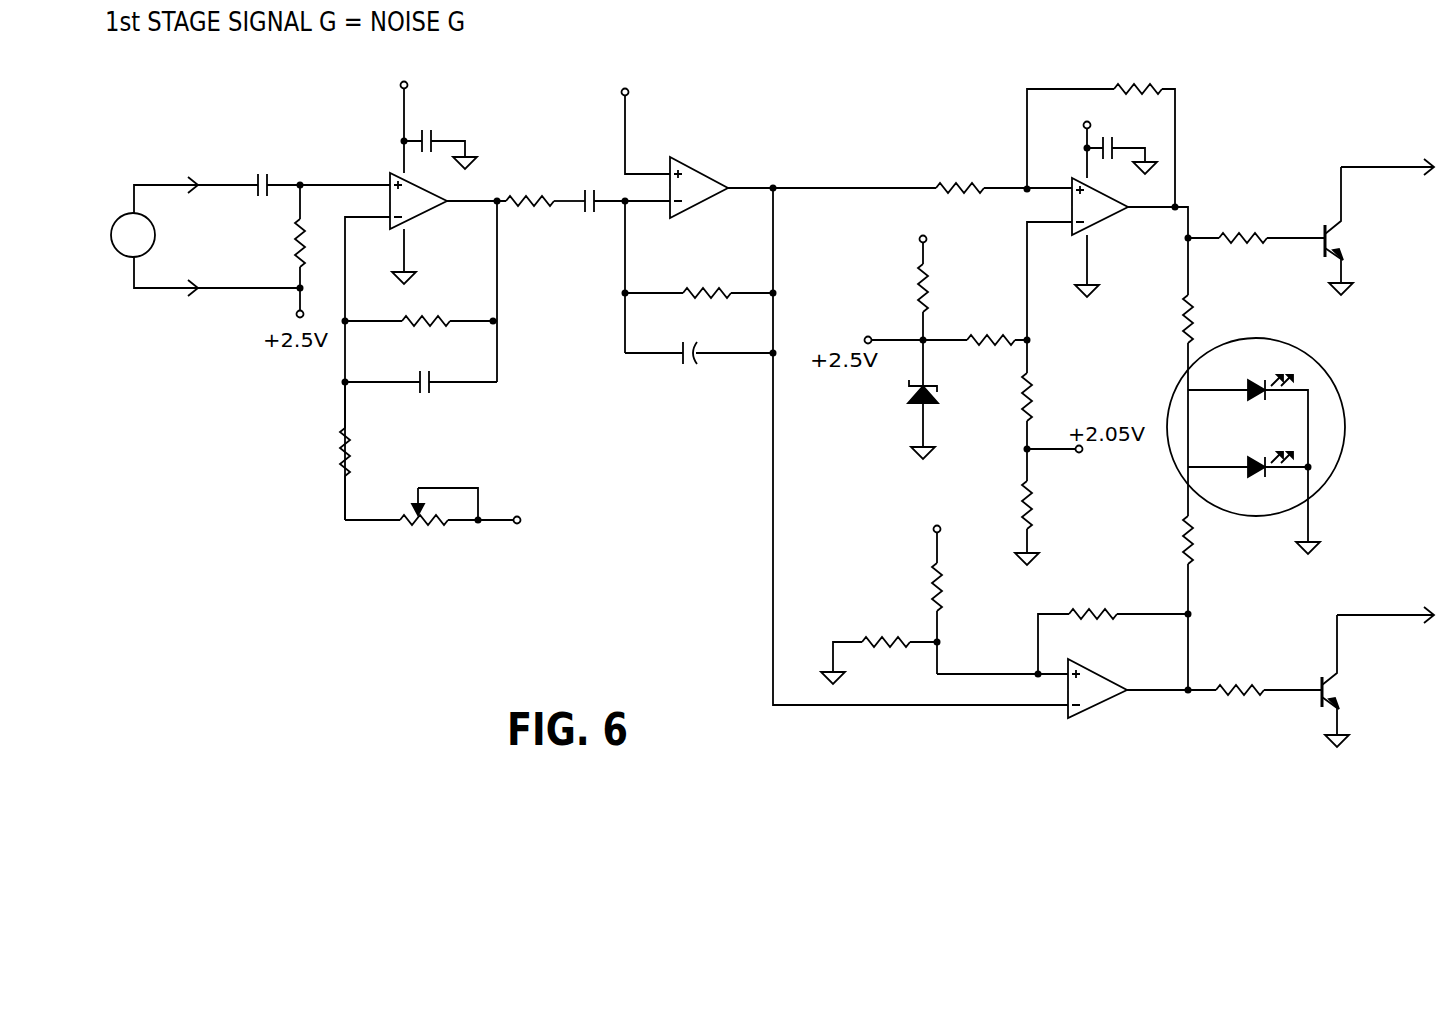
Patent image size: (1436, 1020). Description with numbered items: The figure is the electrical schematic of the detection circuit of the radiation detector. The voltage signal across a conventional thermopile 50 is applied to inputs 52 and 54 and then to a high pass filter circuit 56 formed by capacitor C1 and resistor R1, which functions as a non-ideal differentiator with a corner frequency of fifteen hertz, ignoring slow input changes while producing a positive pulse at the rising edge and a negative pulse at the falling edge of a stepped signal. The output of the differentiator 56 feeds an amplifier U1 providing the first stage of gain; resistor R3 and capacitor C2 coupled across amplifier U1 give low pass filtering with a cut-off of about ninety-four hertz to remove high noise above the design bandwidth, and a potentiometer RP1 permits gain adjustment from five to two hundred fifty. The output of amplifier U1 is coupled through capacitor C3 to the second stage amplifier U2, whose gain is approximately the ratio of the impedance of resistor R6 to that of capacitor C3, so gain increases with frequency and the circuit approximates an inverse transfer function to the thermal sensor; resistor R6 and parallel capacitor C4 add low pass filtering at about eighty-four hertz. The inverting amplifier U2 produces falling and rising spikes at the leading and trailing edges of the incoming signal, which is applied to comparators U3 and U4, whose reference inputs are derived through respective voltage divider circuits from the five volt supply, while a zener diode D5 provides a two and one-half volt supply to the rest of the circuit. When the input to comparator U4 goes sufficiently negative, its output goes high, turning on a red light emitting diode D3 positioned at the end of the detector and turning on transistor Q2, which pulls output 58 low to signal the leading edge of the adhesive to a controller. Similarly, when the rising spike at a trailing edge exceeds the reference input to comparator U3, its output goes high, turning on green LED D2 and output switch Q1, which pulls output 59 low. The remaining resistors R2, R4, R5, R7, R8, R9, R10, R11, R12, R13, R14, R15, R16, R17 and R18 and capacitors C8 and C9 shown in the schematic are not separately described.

The thermopile 50 is at (155, 232).
The input 52 is at (189, 170).
The input 54 is at (190, 296).
The high pass filter circuit 56 is at (382, 171).
The output 58 is at (1415, 618).
The output 59 is at (1386, 166).
The resistor R1 is at (283, 236).
The resistor R2 is at (326, 451).
The resistor R3 is at (421, 309).
The resistor R4 is at (1004, 177).
The resistor R5 is at (1101, 132).
The resistor R6 is at (699, 280).
The resistor R7 is at (910, 276).
The resistor R8 is at (975, 328).
The resistor R9 is at (1043, 394).
The resistor R10 is at (1046, 507).
The resistor R11 is at (1256, 226).
The resistor R12 is at (1269, 677).
The resistor R13 is at (545, 186).
The resistor R14 is at (1223, 603).
The resistor R15 is at (1166, 405).
The resistor R16 is at (1113, 629).
The resistor R17 is at (879, 647).
The resistor R18 is at (949, 588).
The potentiometer RP1 is at (471, 522).
The capacitor C1 is at (275, 171).
The capacitor C2 is at (421, 370).
The capacitor C3 is at (623, 187).
The capacitor C4 is at (699, 339).
The capacitor C8 is at (1121, 144).
The capacitor C9 is at (439, 137).
The amplifier U1 is at (421, 171).
The second stage amplifier U2 is at (654, 145).
The comparator U3 is at (1098, 197).
The comparator U4 is at (1088, 691).
The green LED D2 is at (1248, 407).
The red light emitting diode D3 is at (1254, 490).
The zener diode D5 is at (940, 399).
The output switch Q1 is at (1352, 231).
The transistor Q2 is at (1349, 681).